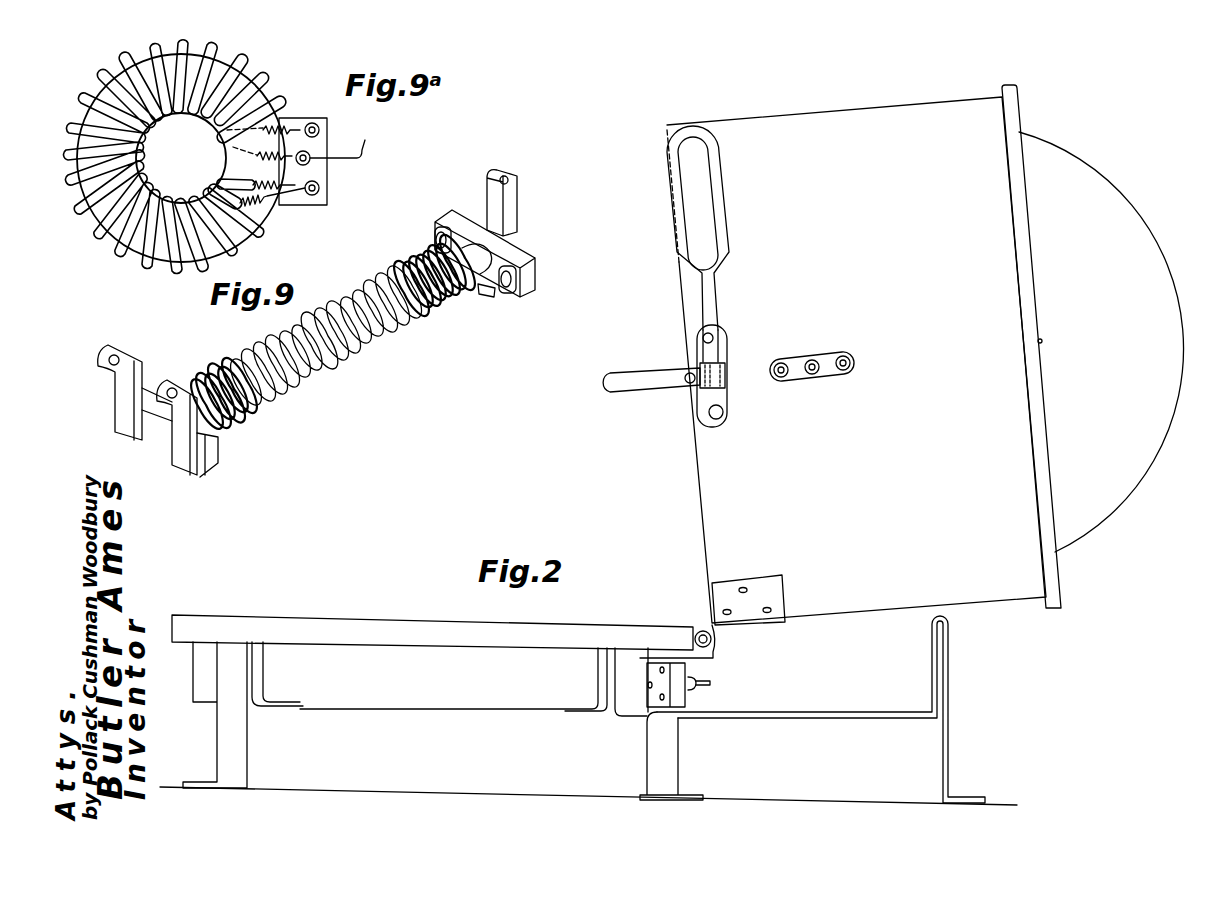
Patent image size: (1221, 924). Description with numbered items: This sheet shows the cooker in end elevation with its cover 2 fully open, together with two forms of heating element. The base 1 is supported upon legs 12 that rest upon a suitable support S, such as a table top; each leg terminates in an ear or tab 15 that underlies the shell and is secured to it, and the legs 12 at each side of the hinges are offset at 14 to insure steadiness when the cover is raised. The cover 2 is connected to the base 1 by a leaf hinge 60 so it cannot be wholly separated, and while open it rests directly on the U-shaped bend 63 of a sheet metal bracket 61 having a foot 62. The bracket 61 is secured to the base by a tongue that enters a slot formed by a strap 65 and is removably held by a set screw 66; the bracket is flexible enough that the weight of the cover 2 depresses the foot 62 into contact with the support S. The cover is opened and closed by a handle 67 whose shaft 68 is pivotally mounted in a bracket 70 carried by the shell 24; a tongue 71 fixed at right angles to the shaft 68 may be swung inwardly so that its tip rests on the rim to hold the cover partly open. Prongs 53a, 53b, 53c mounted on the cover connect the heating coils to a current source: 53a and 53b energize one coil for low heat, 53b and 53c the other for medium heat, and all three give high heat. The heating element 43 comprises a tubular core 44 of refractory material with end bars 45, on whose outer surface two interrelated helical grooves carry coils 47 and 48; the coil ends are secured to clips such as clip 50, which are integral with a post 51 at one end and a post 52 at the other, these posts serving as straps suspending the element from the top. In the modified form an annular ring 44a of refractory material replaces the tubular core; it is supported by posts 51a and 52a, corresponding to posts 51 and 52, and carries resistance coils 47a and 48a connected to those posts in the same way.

In FIG. 2, the base 1 is at (213, 595).
In FIG. 2, the cover 2 is at (1032, 613).
In FIG. 2, the legs 12 is at (233, 752).
In FIG. 2, the offset 14 is at (623, 716).
In FIG. 2, the ear or tab 15 is at (297, 708).
In FIG. 2, the shell 24 is at (856, 360).
In FIG. 2, the support S is at (470, 795).
In FIG. 9, the heating element 43 is at (358, 283).
In FIG. 9, the tubular core 44 is at (477, 265).
In FIG. 9A, the annular ring 44a is at (181, 179).
In FIG. 9, the bars 45 is at (510, 252).
In FIG. 9, the coil 47 is at (325, 374).
In FIG. 9A, the resistance coil 47a is at (236, 145).
In FIG. 9, the coil 48 is at (357, 353).
In FIG. 9A, the resistance coil 48a is at (230, 128).
In FIG. 9, the clip 50 is at (483, 296).
In FIG. 9, the post 51 is at (498, 220).
In FIG. 9A, the bracket or post 51a is at (320, 187).
In FIG. 9, the post 52 is at (123, 408).
In FIG. 9A, the bracket or post 52a is at (319, 130).
In FIG. 2, the prong 53a is at (846, 357).
In FIG. 2, the prong 53b is at (812, 359).
In FIG. 2, the prong 53c is at (792, 334).
In FIG. 2, the leaf hinge 60 is at (718, 618).
In FIG. 2, the bracket 61 is at (883, 715).
In FIG. 2, the foot 62 is at (968, 798).
In FIG. 2, the U-shaped bend 63 is at (951, 622).
In FIG. 2, the strap 65 is at (687, 697).
In FIG. 2, the set screw 66 is at (700, 678).
In FIG. 2, the handle 67 is at (723, 172).
In FIG. 2, the shaft 68 is at (712, 298).
In FIG. 2, the bracket 70 is at (716, 424).
In FIG. 2, the tongue 71 is at (652, 384).